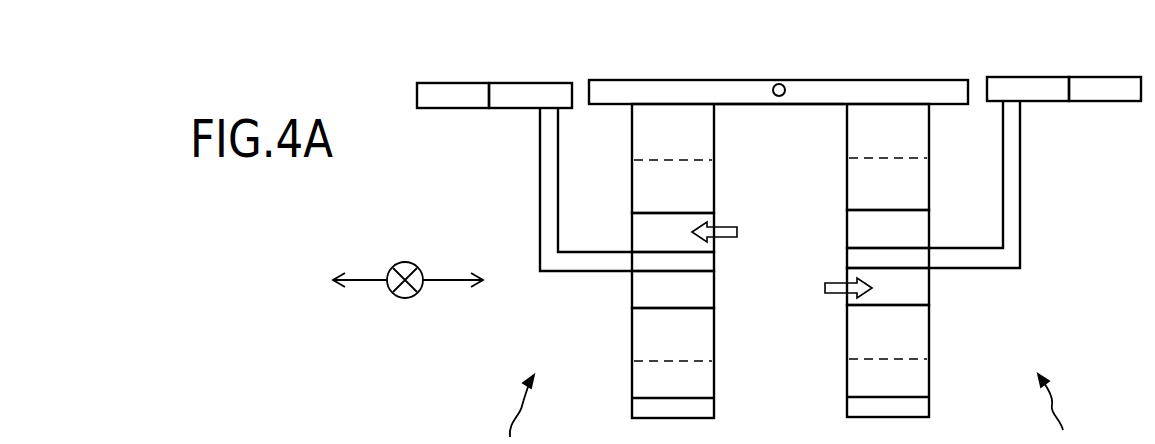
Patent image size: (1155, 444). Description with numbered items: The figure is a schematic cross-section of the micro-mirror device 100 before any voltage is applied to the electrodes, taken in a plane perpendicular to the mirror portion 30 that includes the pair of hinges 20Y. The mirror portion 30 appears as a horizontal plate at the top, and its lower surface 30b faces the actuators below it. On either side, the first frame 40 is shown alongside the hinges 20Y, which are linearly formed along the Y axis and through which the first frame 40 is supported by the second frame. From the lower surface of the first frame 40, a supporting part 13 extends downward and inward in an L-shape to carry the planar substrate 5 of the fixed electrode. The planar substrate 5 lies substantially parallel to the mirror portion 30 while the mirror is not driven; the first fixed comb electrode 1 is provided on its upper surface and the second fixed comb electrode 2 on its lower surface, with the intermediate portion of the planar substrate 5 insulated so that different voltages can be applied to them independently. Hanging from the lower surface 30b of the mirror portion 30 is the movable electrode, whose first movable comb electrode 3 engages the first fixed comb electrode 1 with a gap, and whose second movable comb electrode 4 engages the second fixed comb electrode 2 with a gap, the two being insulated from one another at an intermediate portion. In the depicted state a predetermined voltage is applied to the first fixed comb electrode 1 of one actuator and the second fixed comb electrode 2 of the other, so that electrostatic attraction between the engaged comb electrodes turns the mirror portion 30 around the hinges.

The micro-mirror device 100 is at (880, 68).
The mirror portion 30 is at (808, 92).
The lower surface of the mirror portion 30b is at (741, 106).
The hinges 20Y is at (452, 84).
The first frame 40 is at (540, 84).
The supporting part 13 is at (540, 223).
The first movable comb electrode 3 is at (640, 141).
The first fixed comb electrode 1 is at (642, 225).
The planar substrate 5 is at (703, 262).
The second fixed comb electrode 2 is at (640, 293).
The second movable comb electrode 4 is at (643, 385).